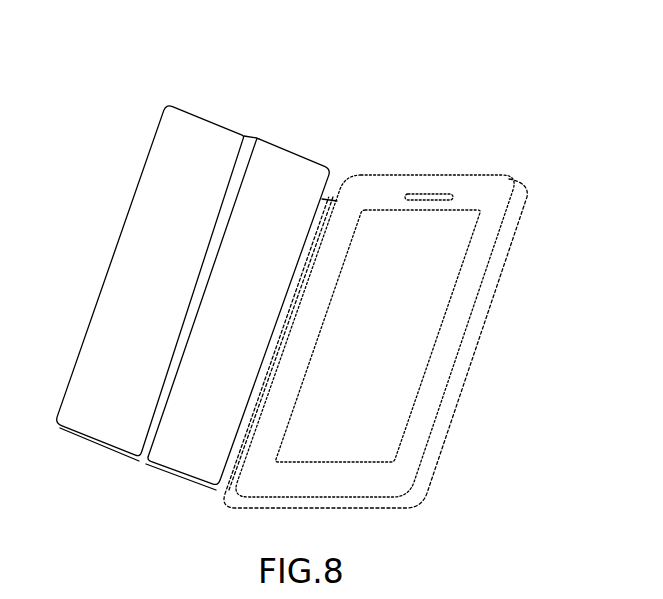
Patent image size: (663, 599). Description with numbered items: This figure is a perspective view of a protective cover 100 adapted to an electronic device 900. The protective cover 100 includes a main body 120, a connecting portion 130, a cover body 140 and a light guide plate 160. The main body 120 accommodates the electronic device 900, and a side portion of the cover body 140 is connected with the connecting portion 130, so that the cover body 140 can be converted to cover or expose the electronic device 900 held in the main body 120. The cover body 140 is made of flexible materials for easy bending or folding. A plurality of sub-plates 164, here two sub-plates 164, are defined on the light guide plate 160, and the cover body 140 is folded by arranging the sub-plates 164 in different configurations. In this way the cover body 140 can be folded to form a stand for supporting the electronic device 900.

The protective cover 100 is at (129, 111).
The main body 120 is at (422, 483).
The connecting portion 130 is at (230, 476).
The cover body 140 is at (140, 460).
The light guide plate 160 is at (233, 50).
The sub-plate 164 is at (213, 121).
The electronic device 900 is at (476, 193).